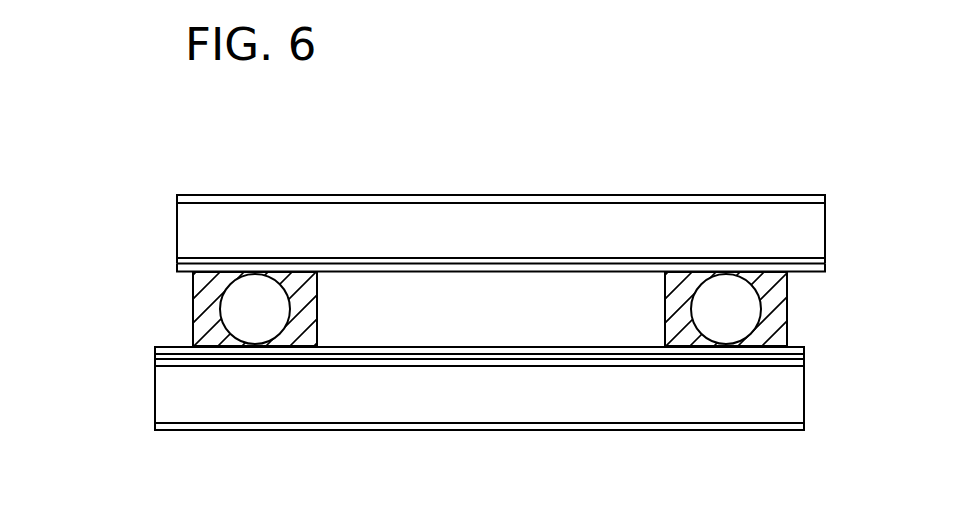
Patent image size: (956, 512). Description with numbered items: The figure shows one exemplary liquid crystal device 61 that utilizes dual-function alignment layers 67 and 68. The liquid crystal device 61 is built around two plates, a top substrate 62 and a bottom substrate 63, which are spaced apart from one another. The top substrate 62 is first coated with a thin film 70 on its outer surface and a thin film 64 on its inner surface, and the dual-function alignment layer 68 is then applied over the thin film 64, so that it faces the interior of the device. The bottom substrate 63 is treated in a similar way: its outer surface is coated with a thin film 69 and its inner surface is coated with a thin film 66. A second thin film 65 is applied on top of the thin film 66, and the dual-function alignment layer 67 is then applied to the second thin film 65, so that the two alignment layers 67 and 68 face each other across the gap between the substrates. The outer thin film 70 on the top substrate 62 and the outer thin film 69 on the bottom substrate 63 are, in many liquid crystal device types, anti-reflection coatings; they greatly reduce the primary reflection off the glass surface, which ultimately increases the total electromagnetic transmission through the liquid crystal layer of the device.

The liquid crystal device 61 is at (666, 104).
The top substrate 62 is at (177, 232).
The bottom substrate 63 is at (155, 392).
The thin film 64 is at (177, 262).
The second thin film 65 is at (155, 349).
The thin film 66 is at (155, 365).
The dual-function alignment layer 67 is at (804, 348).
The dual-function alignment layer 68 is at (825, 271).
The outer thin film 69 is at (804, 430).
The outer thin film 70 is at (825, 200).